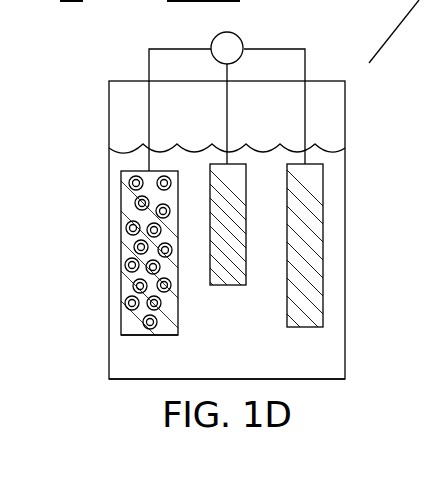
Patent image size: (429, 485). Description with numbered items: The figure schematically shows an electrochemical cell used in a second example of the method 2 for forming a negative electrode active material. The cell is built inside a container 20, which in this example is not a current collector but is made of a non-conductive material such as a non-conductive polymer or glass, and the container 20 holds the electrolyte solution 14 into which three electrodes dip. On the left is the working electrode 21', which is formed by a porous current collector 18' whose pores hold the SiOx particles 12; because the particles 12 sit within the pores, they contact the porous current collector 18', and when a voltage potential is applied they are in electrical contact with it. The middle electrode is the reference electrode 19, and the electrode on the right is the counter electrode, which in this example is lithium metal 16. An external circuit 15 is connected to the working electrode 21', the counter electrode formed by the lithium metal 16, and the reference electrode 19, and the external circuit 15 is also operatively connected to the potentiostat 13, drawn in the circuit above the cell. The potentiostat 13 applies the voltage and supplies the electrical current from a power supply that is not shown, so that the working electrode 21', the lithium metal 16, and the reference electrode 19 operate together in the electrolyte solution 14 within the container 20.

The method 2 is at (60, 219).
The SiOx particles 12 is at (125, 244).
The potentiostat 13 is at (212, 44).
The electrolyte solution 14 is at (152, 356).
The external circuit 15 is at (278, 49).
The lithium metal 16 is at (301, 327).
The porous current collector 18' is at (104, 338).
The reference electrode 19 is at (227, 285).
The container 20 is at (347, 72).
The working electrode 21' is at (115, 261).